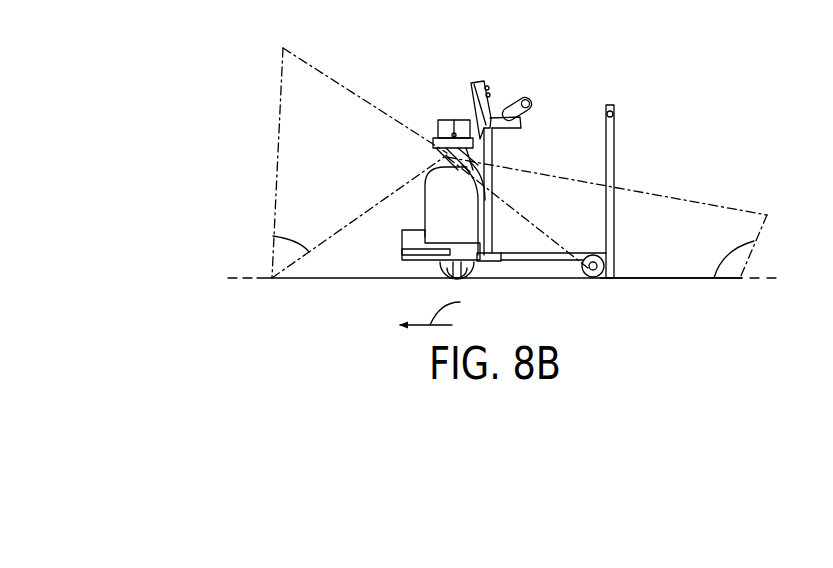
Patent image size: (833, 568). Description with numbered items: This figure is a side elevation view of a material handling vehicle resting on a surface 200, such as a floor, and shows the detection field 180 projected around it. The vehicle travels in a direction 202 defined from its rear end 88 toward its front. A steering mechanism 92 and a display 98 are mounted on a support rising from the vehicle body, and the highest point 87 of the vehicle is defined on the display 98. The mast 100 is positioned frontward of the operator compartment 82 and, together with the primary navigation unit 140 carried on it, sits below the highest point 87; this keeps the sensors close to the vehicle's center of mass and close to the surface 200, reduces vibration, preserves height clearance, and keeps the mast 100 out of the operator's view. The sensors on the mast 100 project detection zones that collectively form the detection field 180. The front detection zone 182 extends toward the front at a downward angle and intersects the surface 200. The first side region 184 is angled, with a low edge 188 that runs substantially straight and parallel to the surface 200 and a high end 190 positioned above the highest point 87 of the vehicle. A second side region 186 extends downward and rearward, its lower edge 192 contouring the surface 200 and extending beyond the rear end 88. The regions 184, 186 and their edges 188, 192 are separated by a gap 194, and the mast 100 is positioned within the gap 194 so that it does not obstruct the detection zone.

The operator compartment 82 is at (574, 130).
The highest point 87 is at (482, 82).
The rear end 88 is at (628, 152).
The steering mechanism 92 is at (528, 119).
The display 98 is at (405, 105).
The mast 100 is at (462, 193).
The primary navigation unit 140 is at (433, 127).
The detection field 180 is at (242, 110).
The front detection zone 182 is at (273, 236).
The first side region 184 is at (352, 104).
The region 186 is at (680, 254).
The low edge 188 is at (343, 280).
The high end 190 is at (283, 49).
The lower edge 192 is at (754, 241).
The gap 194 is at (502, 224).
The surface 200 is at (440, 275).
The direction of travel 202 is at (448, 308).